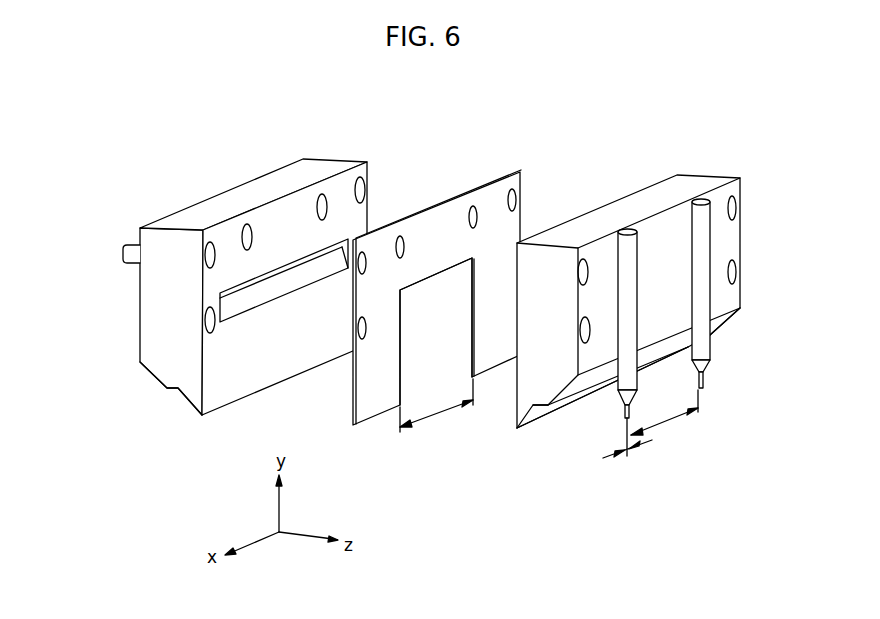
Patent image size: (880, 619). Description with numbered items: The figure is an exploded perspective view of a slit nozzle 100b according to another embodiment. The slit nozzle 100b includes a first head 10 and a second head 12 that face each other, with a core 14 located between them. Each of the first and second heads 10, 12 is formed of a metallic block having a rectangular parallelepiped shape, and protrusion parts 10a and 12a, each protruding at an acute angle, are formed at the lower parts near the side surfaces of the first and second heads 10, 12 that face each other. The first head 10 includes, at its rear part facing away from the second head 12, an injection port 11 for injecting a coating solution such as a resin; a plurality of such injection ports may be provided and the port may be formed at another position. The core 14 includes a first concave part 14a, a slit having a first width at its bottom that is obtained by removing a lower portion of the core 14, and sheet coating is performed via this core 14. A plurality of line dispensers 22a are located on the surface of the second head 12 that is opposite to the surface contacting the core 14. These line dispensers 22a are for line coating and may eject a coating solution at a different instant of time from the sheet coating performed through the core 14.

The slit nozzle 100b is at (732, 138).
The first head 10 is at (228, 193).
The protrusion part 10a is at (190, 403).
The injection port 11 is at (135, 245).
The first core 14 is at (433, 205).
The first concave part 14a is at (437, 276).
The second head 12 is at (617, 207).
The protrusion part 12a is at (528, 415).
The line dispensers 22a is at (633, 290).